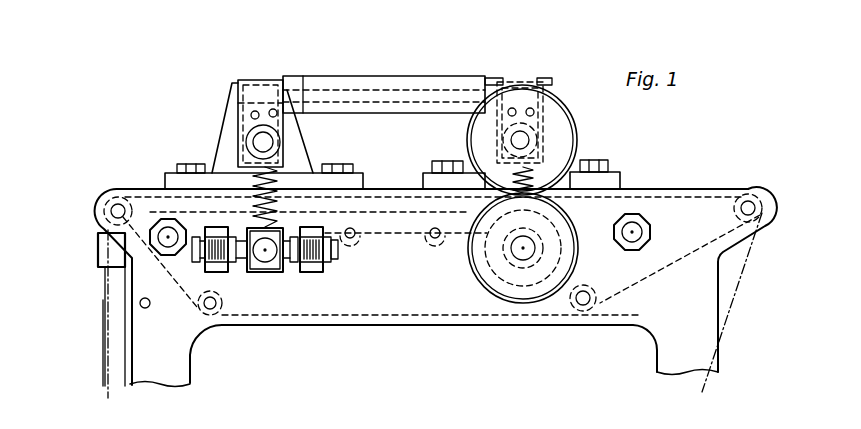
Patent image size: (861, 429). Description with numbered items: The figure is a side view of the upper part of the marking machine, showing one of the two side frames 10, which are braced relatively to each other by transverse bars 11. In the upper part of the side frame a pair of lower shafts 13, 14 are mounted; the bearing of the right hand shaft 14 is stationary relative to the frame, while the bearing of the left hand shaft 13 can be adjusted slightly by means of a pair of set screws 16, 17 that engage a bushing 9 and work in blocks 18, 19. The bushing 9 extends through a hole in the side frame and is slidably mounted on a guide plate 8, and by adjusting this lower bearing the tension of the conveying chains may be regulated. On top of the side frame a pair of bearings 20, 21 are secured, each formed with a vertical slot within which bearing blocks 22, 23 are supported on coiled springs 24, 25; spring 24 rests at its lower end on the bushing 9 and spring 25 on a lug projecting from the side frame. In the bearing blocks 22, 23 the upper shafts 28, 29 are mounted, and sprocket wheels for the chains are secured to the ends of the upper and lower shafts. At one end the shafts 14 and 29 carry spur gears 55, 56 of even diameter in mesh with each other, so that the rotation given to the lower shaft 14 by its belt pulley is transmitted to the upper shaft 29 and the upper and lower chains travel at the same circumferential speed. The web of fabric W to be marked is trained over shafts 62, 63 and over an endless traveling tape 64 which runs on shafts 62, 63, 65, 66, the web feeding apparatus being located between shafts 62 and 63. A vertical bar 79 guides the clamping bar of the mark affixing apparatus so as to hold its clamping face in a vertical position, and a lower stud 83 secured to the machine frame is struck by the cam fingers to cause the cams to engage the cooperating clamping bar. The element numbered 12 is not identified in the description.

The guide plate 8 is at (253, 273).
The bushing 9 is at (280, 268).
The side frame 10 is at (190, 374).
The transverse bar 11 is at (167, 233).
The rod 12 is at (460, 236).
The lower shaft 13 is at (267, 250).
The lower shaft 14 is at (523, 250).
The set screw 16 is at (217, 266).
The set screw 17 is at (327, 262).
The block 18 is at (222, 264).
The block 19 is at (313, 264).
The bearing 20 is at (230, 128).
The bearing 21 is at (592, 180).
The bearing block 22 is at (253, 92).
The bearing block 23 is at (528, 122).
The coiled spring 24 is at (272, 187).
The coiled spring 25 is at (530, 173).
The upper shaft 28 is at (270, 143).
The upper shaft 29 is at (517, 138).
The spur gear 55 is at (567, 188).
The spur gear 56 is at (577, 264).
The shaft 62 is at (762, 214).
The shaft 63 is at (113, 203).
The endless traveling tape 64 is at (693, 280).
The shaft 65 is at (207, 306).
The shaft 66 is at (597, 305).
The vertical bar 79 is at (110, 344).
The lower stud 83 is at (145, 308).
The web of fabric W is at (102, 276).